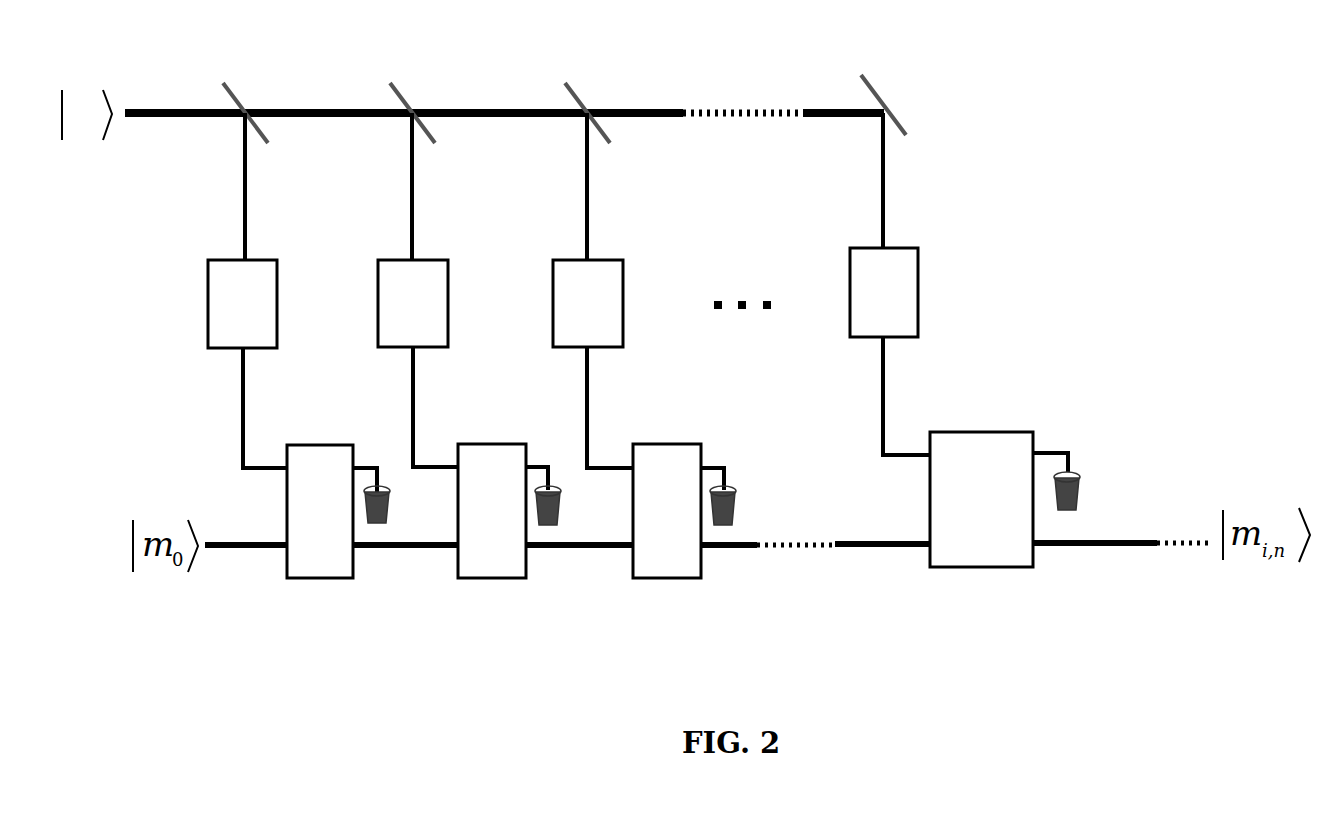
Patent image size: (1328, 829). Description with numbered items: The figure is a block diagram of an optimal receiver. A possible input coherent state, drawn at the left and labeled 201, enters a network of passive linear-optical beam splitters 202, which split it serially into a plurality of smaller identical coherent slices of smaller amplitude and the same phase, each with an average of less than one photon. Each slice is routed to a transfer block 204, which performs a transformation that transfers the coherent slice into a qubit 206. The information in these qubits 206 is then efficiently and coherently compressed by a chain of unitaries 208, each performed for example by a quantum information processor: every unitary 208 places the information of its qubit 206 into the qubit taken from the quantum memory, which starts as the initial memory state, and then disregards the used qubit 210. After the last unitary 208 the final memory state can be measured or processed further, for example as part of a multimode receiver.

The input coherent state |alpha_i 201 is at (100, 147).
The beam splitter 202 is at (250, 110).
The transfer block 204 is at (213, 298).
The qubit 206 is at (242, 410).
The unitary 208 is at (325, 580).
The disregarded qubit 210 is at (373, 523).